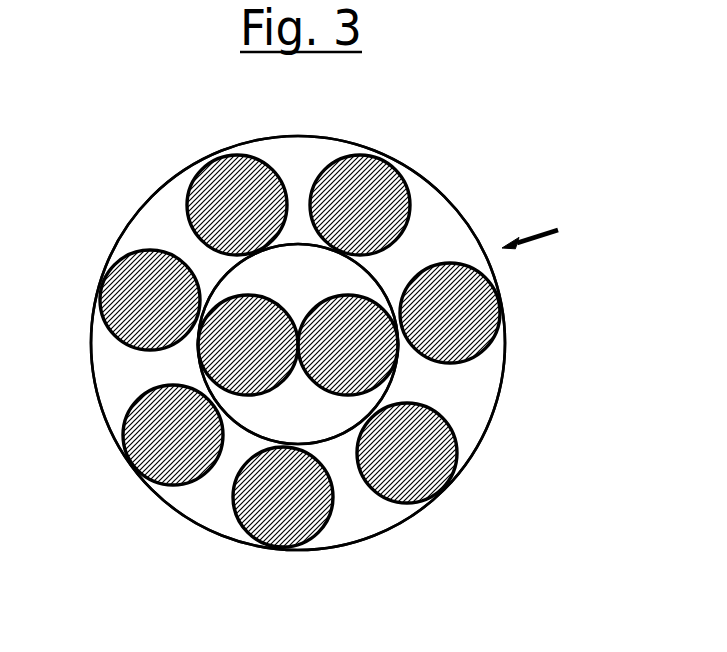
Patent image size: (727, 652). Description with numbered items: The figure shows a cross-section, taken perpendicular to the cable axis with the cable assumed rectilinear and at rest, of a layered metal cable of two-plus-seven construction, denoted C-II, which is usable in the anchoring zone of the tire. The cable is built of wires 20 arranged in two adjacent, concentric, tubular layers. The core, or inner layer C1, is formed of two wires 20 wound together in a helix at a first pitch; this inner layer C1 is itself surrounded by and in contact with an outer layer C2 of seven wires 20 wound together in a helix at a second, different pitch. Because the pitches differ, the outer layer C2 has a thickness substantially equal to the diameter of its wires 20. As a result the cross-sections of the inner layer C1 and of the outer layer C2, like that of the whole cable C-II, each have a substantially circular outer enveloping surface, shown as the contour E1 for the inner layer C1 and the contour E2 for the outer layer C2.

The wires 20 is at (348, 348).
The contour of the inner layer E1 is at (222, 278).
The contour of the outer layer E2 is at (390, 527).
The inner layer C1 is at (280, 413).
The outer layer C2 is at (448, 383).
The 2+7 cable C-II is at (565, 228).